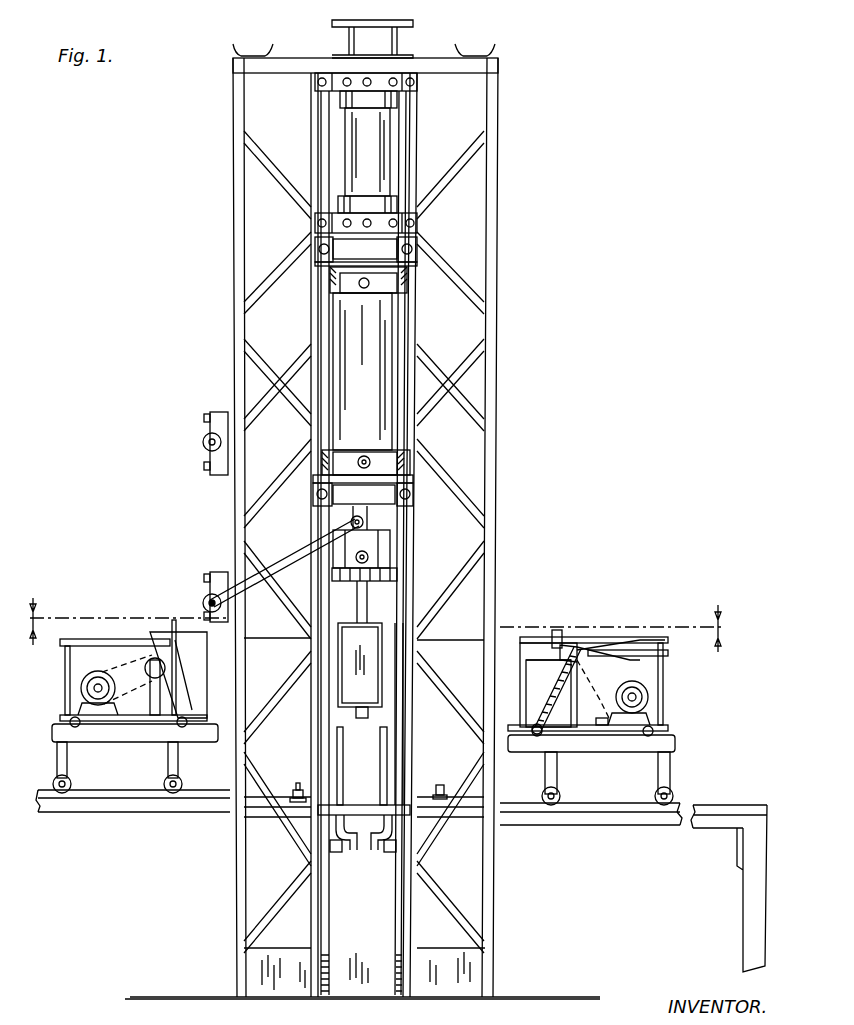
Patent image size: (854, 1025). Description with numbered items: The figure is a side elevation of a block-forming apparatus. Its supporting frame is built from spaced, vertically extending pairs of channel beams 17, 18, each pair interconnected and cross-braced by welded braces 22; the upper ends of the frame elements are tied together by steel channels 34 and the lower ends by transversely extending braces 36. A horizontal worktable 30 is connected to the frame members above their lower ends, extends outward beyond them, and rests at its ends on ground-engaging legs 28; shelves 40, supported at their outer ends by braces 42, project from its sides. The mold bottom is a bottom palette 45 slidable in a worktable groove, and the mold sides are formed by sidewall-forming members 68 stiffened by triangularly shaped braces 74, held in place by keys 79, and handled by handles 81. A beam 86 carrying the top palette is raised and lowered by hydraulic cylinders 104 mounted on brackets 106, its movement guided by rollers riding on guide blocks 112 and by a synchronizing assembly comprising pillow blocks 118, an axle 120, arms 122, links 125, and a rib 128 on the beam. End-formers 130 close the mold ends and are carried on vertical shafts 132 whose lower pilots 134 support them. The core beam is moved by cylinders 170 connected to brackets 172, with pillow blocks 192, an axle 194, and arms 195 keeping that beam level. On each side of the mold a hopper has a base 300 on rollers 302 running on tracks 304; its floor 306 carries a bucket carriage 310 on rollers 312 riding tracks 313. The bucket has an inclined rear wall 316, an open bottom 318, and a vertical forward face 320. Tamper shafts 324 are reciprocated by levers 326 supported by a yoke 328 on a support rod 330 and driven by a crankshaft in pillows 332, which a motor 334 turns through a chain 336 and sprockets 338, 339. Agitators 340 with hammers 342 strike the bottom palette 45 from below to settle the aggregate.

The channel beam 17 is at (318, 312).
The channel beam 18 is at (410, 430).
The brace 22 is at (248, 282).
The ground-engaging leg 28 is at (748, 927).
The worktable 30 is at (62, 812).
The steel channel 34 is at (499, 74).
The transversely extending brace 36 is at (265, 985).
The shelf 40 is at (340, 820).
The brace 42 is at (330, 925).
The bottom palette 45 is at (418, 732).
The mold sidewall-forming member 68 is at (355, 763).
The triangularly shaped brace 74 is at (442, 784).
The key 79 is at (292, 795).
The handle 81 is at (412, 790).
The beam 86 is at (424, 548).
The hydraulic cylinder 104 is at (378, 358).
The bracket 106 is at (418, 476).
The guide block 112 is at (415, 690).
The pillow block 118 is at (204, 592).
The axle 120 is at (203, 603).
The arm 122 is at (285, 560).
The link 125 is at (350, 562).
The rib 128 is at (370, 562).
The end-former 130 is at (345, 690).
The shaft 132 is at (370, 607).
The pilot 134 is at (365, 727).
The hydraulic cylinder 170 is at (360, 151).
The bracket 172 is at (418, 218).
The pillow block 192 is at (205, 435).
The axle 194 is at (203, 442).
The arm 195 is at (268, 402).
The base 300 is at (78, 752).
The roller 302 is at (170, 790).
The track 304 is at (594, 825).
The floor 306 is at (186, 744).
The bucket carriage 310 is at (106, 640).
The roller 312 is at (60, 718).
The track 313 is at (52, 730).
The inclined rear wall 316 is at (580, 654).
The open bottom 318 is at (506, 735).
The forward face 320 is at (212, 686).
The tamper shaft 324 is at (590, 680).
The lever 326 is at (555, 650).
The yoke 328 is at (570, 645).
The support rod 330 is at (552, 635).
The pillow 332 is at (620, 710).
The motor 334 is at (640, 695).
The chain 336 is at (124, 700).
The sprocket 338 is at (92, 680).
The sprocket 339 is at (155, 700).
The agitator 340 is at (386, 850).
The hammer 342 is at (343, 848).